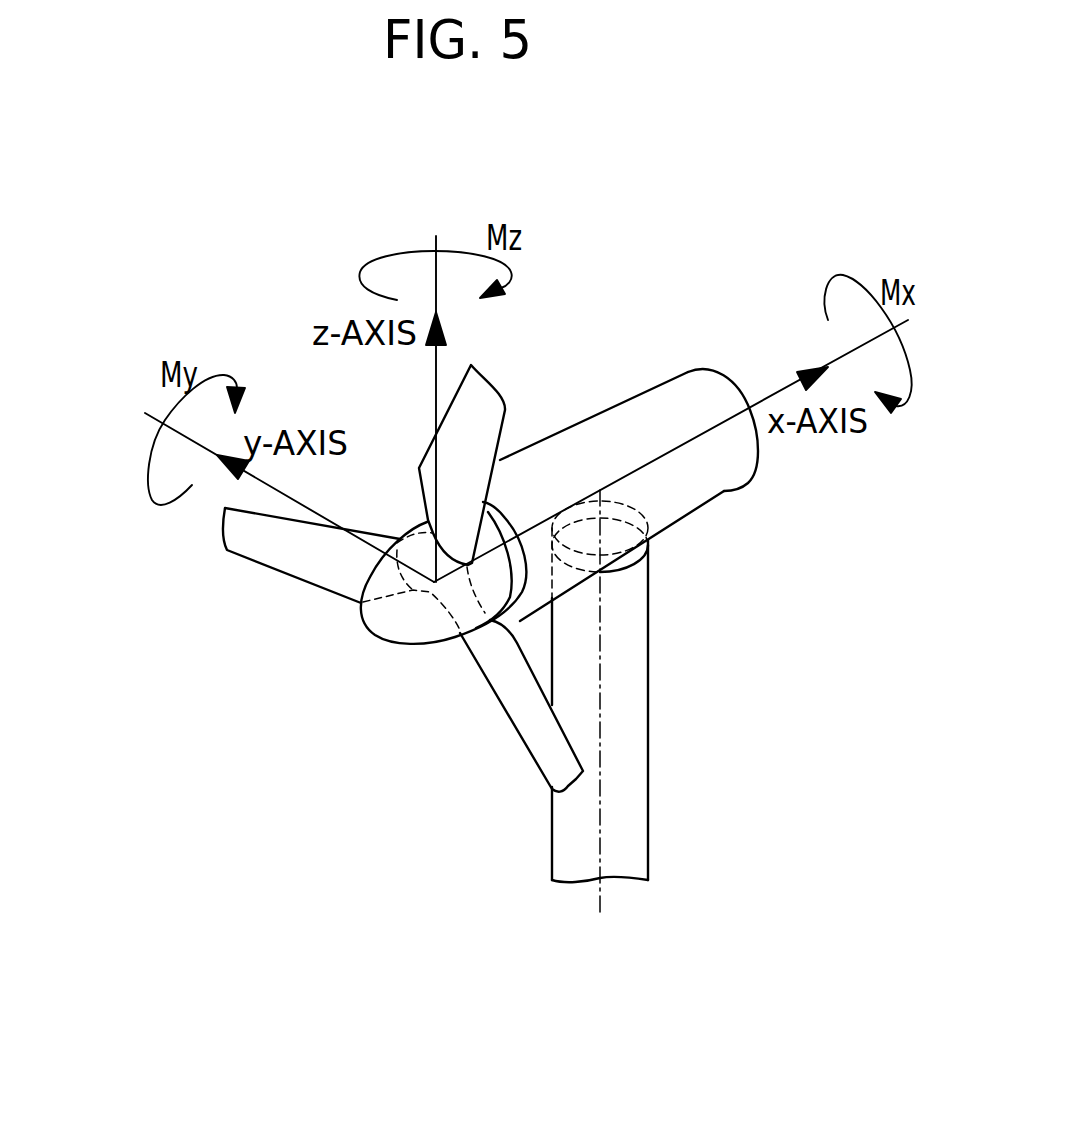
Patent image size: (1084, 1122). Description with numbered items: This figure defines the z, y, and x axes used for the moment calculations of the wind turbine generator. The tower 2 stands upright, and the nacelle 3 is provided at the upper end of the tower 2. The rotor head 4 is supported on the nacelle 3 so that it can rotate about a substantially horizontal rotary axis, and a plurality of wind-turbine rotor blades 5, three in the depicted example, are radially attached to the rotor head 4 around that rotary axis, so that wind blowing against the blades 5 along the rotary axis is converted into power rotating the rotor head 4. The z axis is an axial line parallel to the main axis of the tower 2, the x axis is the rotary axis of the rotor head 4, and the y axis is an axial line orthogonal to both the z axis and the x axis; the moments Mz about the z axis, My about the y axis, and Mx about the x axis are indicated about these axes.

The tower 2 is at (622, 698).
The nacelle 3 is at (713, 485).
The rotor head 4 is at (395, 625).
The wind-turbine rotor blade 5 is at (497, 423).